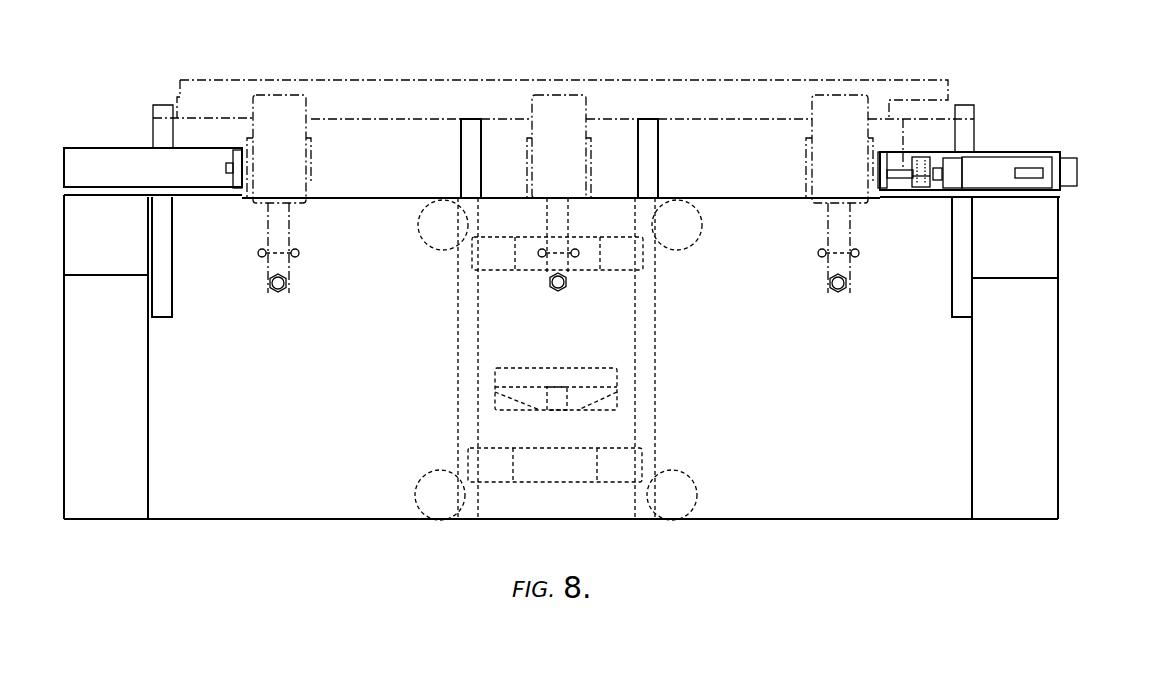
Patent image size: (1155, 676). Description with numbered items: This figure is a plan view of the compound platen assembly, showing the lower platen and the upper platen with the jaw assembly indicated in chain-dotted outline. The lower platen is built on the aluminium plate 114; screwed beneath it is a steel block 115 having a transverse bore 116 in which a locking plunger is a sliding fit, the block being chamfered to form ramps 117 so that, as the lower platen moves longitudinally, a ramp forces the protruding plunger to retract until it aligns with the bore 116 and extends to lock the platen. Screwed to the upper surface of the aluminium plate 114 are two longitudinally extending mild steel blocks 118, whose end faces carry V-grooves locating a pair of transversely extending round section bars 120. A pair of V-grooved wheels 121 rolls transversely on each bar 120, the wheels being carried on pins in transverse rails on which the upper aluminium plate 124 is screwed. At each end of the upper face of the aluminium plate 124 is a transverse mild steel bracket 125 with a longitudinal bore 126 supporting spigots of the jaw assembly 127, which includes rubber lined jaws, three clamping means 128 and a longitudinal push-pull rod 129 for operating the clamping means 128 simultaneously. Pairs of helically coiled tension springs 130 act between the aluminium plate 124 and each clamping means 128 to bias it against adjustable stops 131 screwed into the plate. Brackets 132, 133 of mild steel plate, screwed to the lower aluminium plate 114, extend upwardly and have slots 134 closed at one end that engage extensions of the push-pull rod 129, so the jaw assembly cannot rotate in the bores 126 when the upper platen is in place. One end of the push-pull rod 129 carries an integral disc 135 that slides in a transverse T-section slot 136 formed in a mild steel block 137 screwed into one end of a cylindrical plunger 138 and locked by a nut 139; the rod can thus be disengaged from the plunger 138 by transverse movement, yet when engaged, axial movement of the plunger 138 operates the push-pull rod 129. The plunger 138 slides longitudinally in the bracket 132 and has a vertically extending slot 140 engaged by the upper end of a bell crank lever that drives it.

The aluminium plate 114 is at (1017, 510).
The steel block 115 is at (550, 375).
The transverse bore 116 is at (562, 390).
The ramps 117 is at (513, 400).
The mild steel blocks 118 is at (623, 267).
The round section bars 120 is at (465, 517).
The wheels 121 is at (432, 240).
The upper aluminium plate 124 is at (240, 508).
The brackets 125 is at (160, 128).
The longitudinal bores 126 is at (158, 108).
The jaw assembly 127 is at (330, 93).
The clamping means 128 is at (287, 107).
The push-pull rod 129 is at (230, 168).
The tension springs 130 is at (258, 253).
The adjustable stops 131 is at (278, 290).
The bracket 132 is at (1055, 195).
The bracket 133 is at (125, 192).
The slots 134 is at (238, 150).
The disc 135 is at (922, 177).
The T-section slot 136 is at (922, 158).
The mild steel block 137 is at (917, 177).
The cylindrical plunger 138 is at (1072, 182).
The nut 139 is at (940, 173).
The vertically extending slot 140 is at (1027, 170).